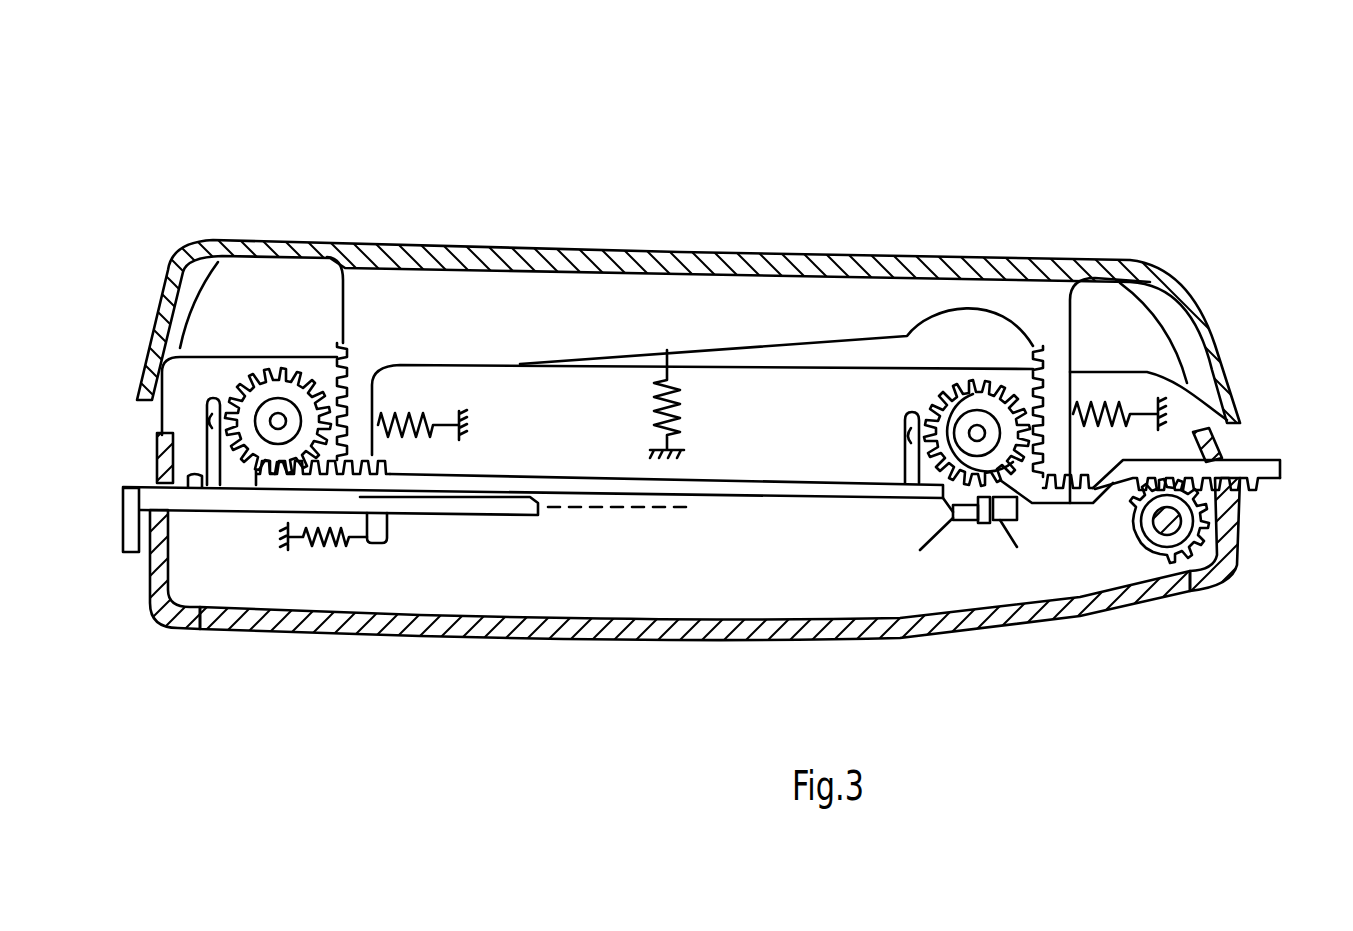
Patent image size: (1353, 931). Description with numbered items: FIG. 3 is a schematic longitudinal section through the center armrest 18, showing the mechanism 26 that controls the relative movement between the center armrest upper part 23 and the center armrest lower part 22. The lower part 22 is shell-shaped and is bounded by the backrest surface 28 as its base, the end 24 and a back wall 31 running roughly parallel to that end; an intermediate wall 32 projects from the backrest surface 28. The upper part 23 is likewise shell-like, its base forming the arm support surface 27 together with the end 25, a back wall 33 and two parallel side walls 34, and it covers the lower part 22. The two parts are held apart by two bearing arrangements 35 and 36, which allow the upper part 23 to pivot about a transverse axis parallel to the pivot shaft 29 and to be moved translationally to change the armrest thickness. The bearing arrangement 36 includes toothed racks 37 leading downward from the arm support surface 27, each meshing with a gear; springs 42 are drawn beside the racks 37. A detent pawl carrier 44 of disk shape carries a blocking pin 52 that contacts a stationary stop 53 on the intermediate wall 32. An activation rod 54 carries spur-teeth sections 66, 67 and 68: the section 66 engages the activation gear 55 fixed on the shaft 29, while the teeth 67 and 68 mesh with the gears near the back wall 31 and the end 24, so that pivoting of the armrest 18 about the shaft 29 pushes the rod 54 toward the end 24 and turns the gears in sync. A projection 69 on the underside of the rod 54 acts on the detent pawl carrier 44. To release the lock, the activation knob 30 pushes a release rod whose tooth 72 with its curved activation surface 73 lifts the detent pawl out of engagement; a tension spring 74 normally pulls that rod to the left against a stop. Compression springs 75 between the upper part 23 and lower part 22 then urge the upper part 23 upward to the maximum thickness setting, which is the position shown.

The center armrest 18 is at (775, 112).
The center armrest lower part 22 is at (688, 664).
The center armrest upper part 23 is at (642, 226).
The end 24 is at (152, 588).
The end 25 is at (150, 335).
The mechanism 26 is at (483, 590).
The arm support surface 27 is at (818, 254).
The backrest surface 28 is at (803, 638).
The shaft 29 is at (1164, 538).
The activation knob 30 is at (124, 520).
The back wall 31 is at (1237, 527).
The intermediate wall 32 is at (765, 571).
The back wall 33 is at (1215, 345).
The side walls 34 is at (290, 321).
The bearing arrangement 35 is at (390, 296).
The bearing arrangement 36 is at (1021, 238).
The toothed rack 37 is at (1055, 348).
The spring 42 is at (440, 422).
The detent pawl carrier 44 is at (1008, 480).
The blocking pin 52 is at (980, 525).
The stationary stop 53 is at (1006, 527).
The activation rod 54 is at (742, 483).
The activation gear 55 is at (1238, 584).
The toothed section 66 is at (1255, 470).
The teeth 67 is at (1096, 505).
The teeth 68 is at (392, 466).
The projection 69 is at (947, 520).
The tooth 72 is at (194, 470).
The activation surface 73 is at (198, 488).
The tension spring 74 is at (340, 548).
The compression spring 75 is at (670, 408).